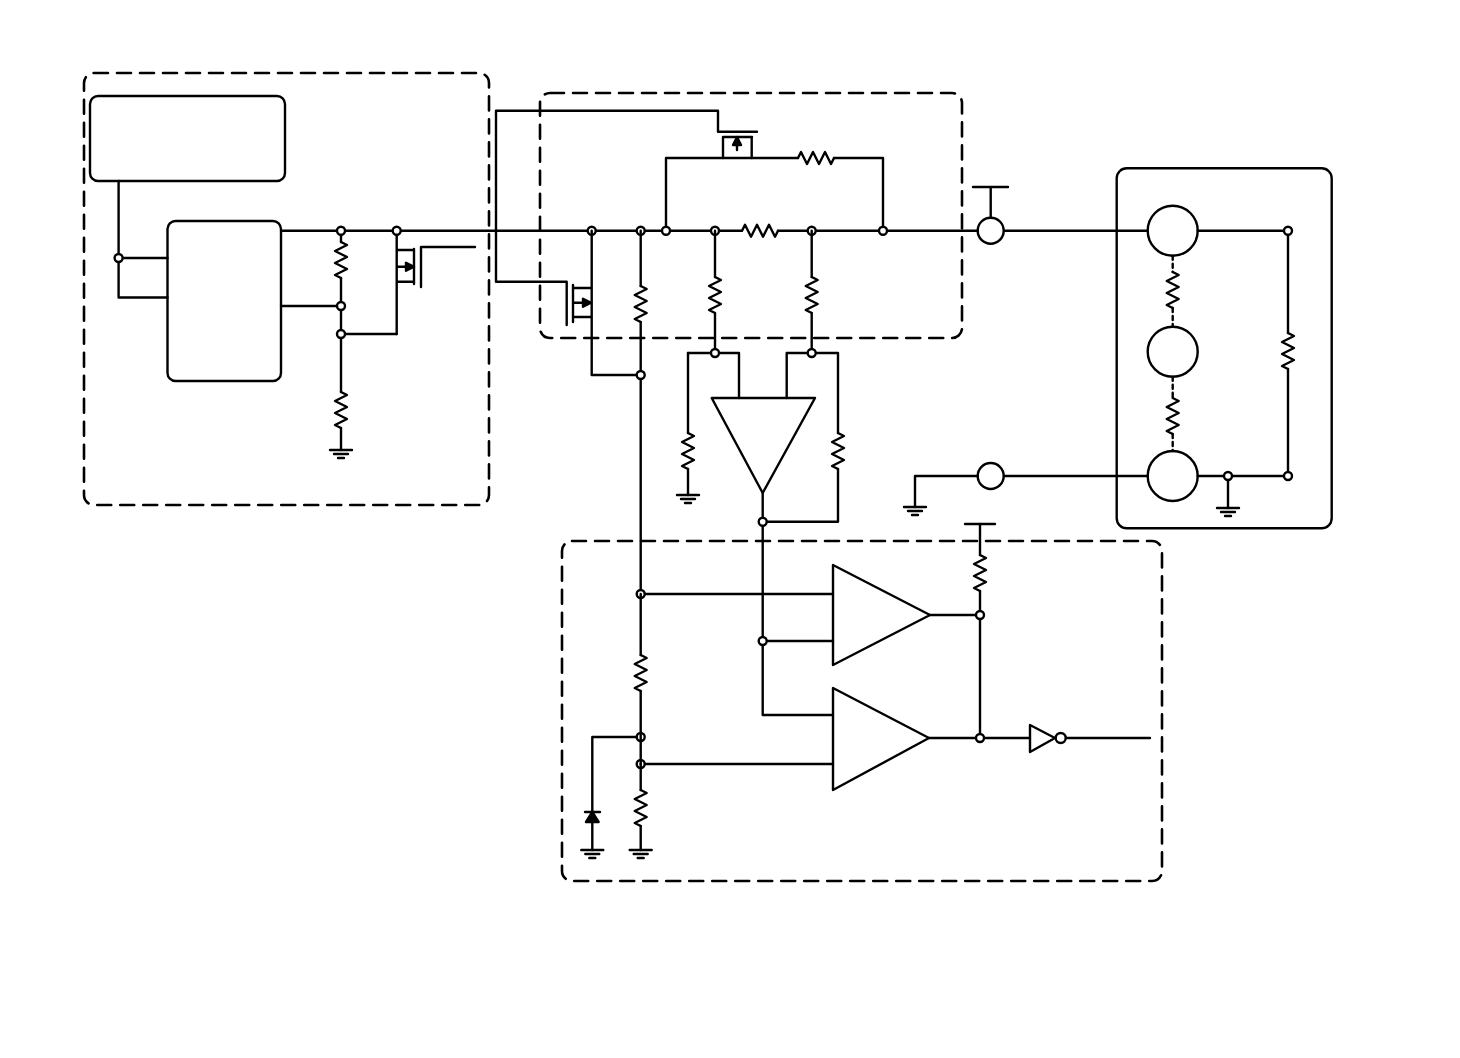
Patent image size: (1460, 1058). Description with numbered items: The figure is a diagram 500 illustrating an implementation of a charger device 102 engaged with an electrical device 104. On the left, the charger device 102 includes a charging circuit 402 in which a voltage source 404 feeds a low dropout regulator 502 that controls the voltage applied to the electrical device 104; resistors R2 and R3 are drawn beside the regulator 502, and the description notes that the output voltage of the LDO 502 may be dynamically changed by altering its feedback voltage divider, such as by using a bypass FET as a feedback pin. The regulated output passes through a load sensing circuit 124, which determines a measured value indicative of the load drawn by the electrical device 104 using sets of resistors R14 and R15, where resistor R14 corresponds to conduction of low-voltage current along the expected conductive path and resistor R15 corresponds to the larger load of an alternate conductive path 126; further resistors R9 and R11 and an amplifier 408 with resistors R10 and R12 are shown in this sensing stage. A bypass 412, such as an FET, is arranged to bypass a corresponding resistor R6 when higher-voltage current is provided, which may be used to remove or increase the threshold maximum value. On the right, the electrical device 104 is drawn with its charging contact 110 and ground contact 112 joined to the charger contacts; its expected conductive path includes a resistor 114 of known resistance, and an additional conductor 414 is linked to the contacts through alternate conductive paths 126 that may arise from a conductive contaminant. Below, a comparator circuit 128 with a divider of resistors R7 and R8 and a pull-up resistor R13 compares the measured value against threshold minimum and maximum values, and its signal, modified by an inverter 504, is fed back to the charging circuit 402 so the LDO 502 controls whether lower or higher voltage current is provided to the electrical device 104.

The diagram 500 is at (1369, 70).
The charger device 102 is at (338, 49).
The charging circuit 402 is at (286, 289).
The voltage source 404 is at (187, 138).
The low dropout regulator 502 is at (225, 301).
The resistor R2 is at (326, 268).
The resistor R3 is at (329, 382).
The load sensing circuit 124 is at (675, 404).
The resistor R14 is at (817, 171).
The resistor R15 is at (761, 217).
The resistor R9 is at (730, 292).
The resistor R11 is at (835, 292).
The resistor R6 is at (627, 412).
The bypass 412 is at (579, 333).
The resistor R10 is at (672, 428).
The resistor R12 is at (826, 477).
The amplifier 408 is at (763, 444).
The electrical device 104 is at (1224, 348).
The charging contact 110 is at (1173, 231).
The additional conductor 414 is at (1173, 352).
The ground contact 112 is at (1173, 476).
The alternate conductive path 126 is at (1149, 353).
The resistor 114 is at (1268, 351).
The comparator circuit 128 is at (862, 702).
The resistor R7 is at (627, 679).
The resistor R8 is at (629, 811).
The resistor R13 is at (959, 573).
The inverter 504 is at (1040, 725).